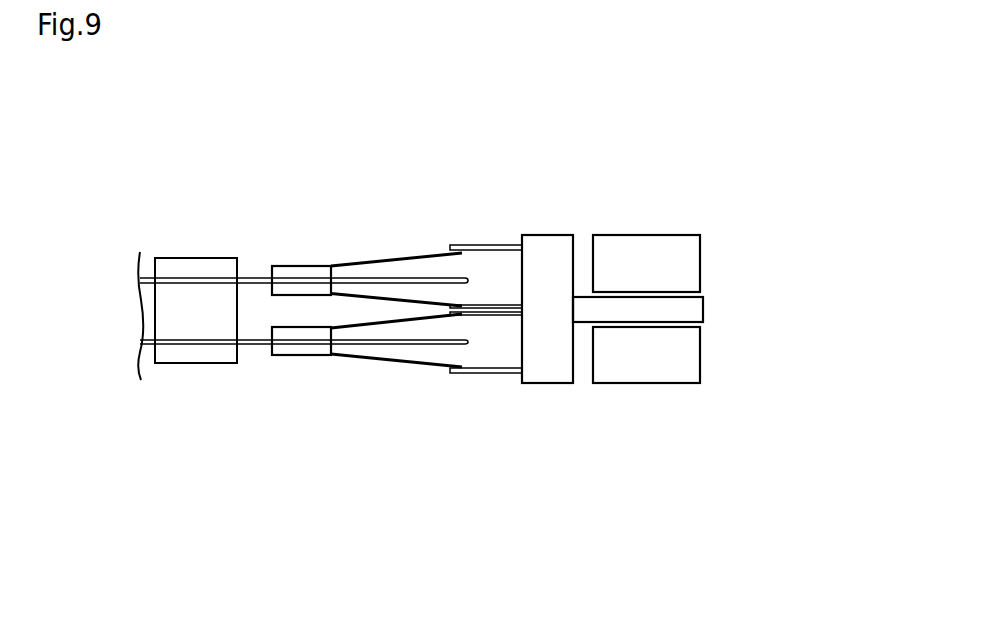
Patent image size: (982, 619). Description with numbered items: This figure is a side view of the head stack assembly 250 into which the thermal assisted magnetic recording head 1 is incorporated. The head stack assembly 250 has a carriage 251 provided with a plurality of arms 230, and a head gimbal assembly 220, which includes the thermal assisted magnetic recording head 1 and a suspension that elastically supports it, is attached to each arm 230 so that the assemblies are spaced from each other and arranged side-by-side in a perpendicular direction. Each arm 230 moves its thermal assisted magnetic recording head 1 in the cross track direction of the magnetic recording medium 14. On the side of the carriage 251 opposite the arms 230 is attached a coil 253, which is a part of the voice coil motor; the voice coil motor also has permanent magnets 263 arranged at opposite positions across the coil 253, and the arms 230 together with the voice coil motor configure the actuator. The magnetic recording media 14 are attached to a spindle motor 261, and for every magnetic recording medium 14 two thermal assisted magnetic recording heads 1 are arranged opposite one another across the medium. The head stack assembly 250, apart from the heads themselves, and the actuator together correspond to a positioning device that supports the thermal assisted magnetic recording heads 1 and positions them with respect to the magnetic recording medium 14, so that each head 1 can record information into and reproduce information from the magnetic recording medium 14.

The thermal assisted magnetic recording head 1 is at (303, 280).
The magnetic recording medium 14 is at (248, 278).
The head gimbal assembly 220 is at (386, 260).
The arm 230 is at (466, 244).
The head stack assembly 250 is at (564, 309).
The carriage 251 is at (552, 377).
The coil 253 is at (697, 309).
The spindle motor 261 is at (177, 263).
The permanent magnets 263 is at (640, 236).